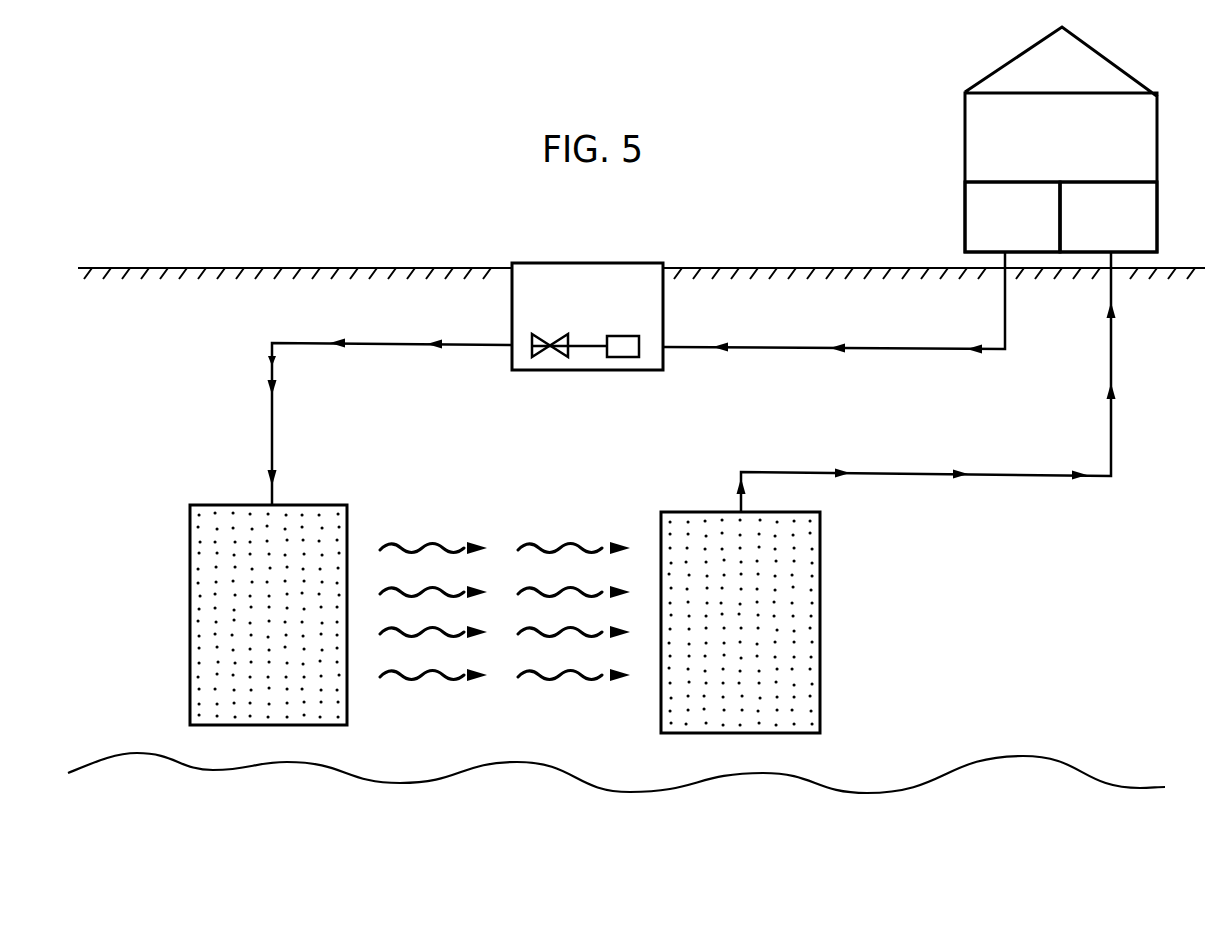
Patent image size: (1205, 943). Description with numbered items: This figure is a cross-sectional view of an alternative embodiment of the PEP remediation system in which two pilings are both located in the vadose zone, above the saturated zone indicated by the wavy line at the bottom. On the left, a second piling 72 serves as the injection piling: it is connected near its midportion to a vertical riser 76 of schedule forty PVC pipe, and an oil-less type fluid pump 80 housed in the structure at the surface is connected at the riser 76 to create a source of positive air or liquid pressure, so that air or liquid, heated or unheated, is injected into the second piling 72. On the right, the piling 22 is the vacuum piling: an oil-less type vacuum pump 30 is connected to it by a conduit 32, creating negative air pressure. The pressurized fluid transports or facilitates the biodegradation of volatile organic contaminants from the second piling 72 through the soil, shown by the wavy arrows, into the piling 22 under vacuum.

The fluid pump 80 is at (1022, 231).
The vacuum pump 30 is at (1123, 231).
The vertical riser 76 is at (271, 364).
The conduit 32 is at (988, 474).
The second piling 72 is at (192, 658).
The piling 22 is at (820, 668).